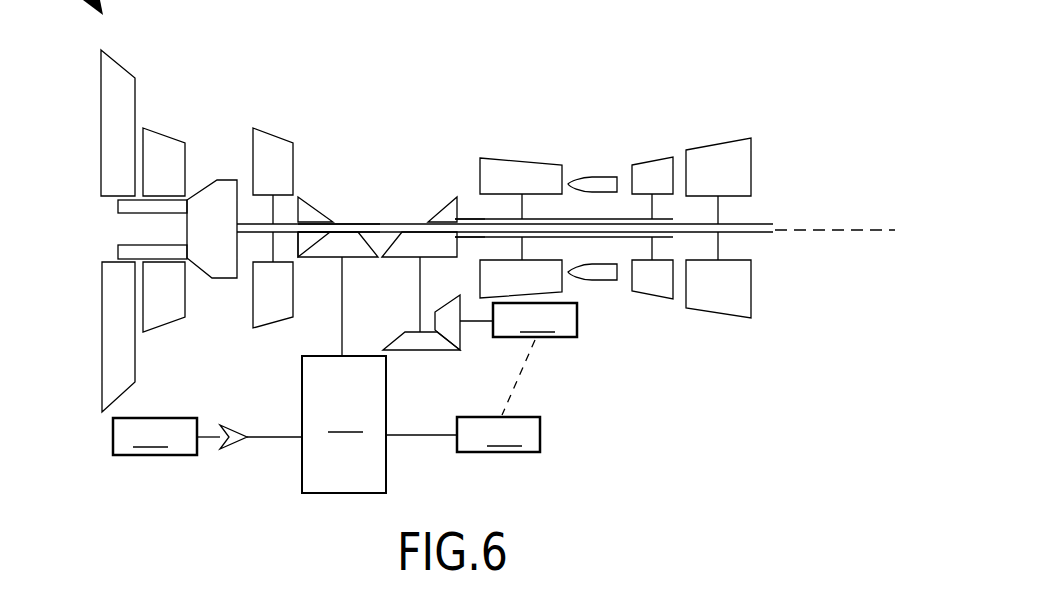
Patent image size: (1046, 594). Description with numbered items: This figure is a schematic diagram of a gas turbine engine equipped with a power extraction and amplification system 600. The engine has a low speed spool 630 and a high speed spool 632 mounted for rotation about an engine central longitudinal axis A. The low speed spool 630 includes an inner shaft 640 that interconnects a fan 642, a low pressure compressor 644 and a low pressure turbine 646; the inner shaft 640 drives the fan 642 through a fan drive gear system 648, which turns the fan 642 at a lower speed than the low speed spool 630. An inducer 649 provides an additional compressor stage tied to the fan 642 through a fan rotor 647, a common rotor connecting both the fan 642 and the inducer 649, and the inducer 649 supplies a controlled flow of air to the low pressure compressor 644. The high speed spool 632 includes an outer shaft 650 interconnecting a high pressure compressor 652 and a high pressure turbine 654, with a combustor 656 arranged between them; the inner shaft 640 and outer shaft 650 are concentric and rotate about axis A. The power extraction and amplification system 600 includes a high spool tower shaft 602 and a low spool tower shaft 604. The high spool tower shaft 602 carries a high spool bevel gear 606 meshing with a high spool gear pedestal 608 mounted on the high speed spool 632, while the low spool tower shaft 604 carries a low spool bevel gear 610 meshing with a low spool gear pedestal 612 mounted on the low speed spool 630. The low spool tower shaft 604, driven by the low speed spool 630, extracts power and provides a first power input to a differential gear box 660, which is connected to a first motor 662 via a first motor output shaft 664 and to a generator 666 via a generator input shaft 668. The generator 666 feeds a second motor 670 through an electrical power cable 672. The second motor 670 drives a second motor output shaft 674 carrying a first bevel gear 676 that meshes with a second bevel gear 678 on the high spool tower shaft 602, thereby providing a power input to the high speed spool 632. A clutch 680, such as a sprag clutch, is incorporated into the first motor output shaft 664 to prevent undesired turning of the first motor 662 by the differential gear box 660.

The power extraction and amplification system 600 is at (238, 469).
The high spool tower shaft 602 is at (421, 266).
The low spool tower shaft 604 is at (342, 324).
The high spool bevel gear 606 is at (407, 250).
The high spool gear pedestal 608 is at (447, 211).
The low spool bevel gear 610 is at (325, 250).
The low spool gear pedestal 612 is at (305, 208).
The low speed spool 630 is at (338, 221).
The high speed spool 632 is at (460, 221).
The inner shaft 640 is at (365, 226).
The fan 642 is at (121, 78).
The low pressure compressor 644 is at (268, 145).
The low pressure turbine 646 is at (715, 157).
The fan rotor 647 is at (135, 202).
The fan drive gear system 648 is at (216, 193).
The inducer 649 is at (158, 143).
The outer shaft 650 is at (477, 218).
The high pressure compressor 652 is at (520, 177).
The high pressure turbine 654 is at (648, 168).
The combustor 656 is at (587, 178).
The differential gear box 660 is at (344, 424).
The first motor 662 is at (166, 436).
The first motor output shaft 664 is at (267, 435).
The generator 666 is at (498, 434).
The generator input shaft 668 is at (397, 433).
The second motor 670 is at (535, 320).
The electrical power cable 672 is at (517, 378).
The second motor output shaft 674 is at (461, 320).
The first bevel gear 676 is at (442, 313).
The second bevel gear 678 is at (410, 341).
The clutch 680 is at (232, 427).
The engine central longitudinal axis A is at (843, 233).